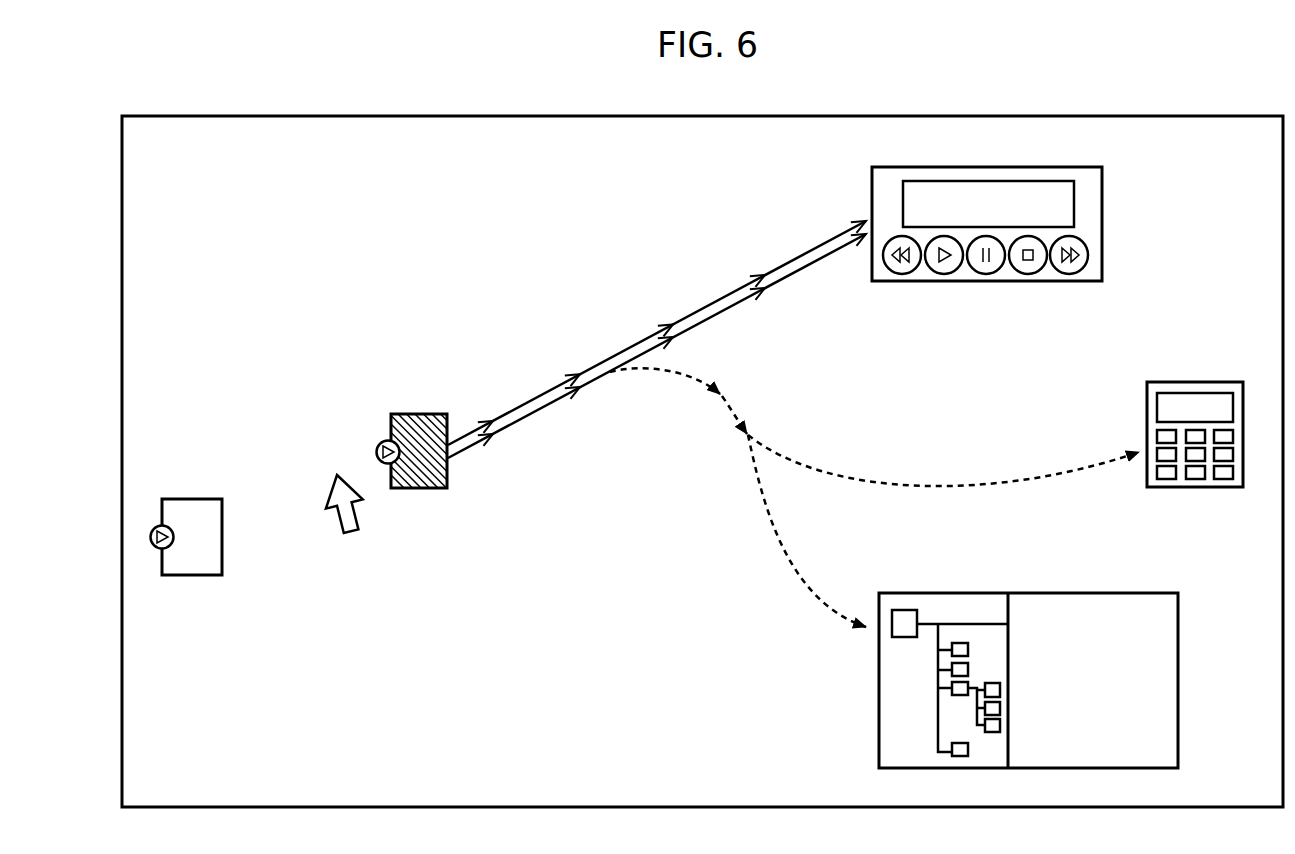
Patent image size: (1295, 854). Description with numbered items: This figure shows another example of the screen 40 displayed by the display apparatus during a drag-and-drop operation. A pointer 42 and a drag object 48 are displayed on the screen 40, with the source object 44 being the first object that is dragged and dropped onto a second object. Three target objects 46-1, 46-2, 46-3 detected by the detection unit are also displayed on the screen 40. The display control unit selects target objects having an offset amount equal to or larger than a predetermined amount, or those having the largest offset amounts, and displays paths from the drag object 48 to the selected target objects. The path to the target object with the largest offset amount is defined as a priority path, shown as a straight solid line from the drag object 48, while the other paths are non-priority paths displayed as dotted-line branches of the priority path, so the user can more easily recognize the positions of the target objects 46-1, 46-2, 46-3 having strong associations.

The screen 40 is at (1150, 116).
The pointer 42 is at (350, 536).
The source object 44 is at (203, 499).
The target object 46-1 is at (1103, 215).
The target object 46-2 is at (1147, 412).
The target object 46-3 is at (1100, 592).
The drag object 48 is at (417, 413).